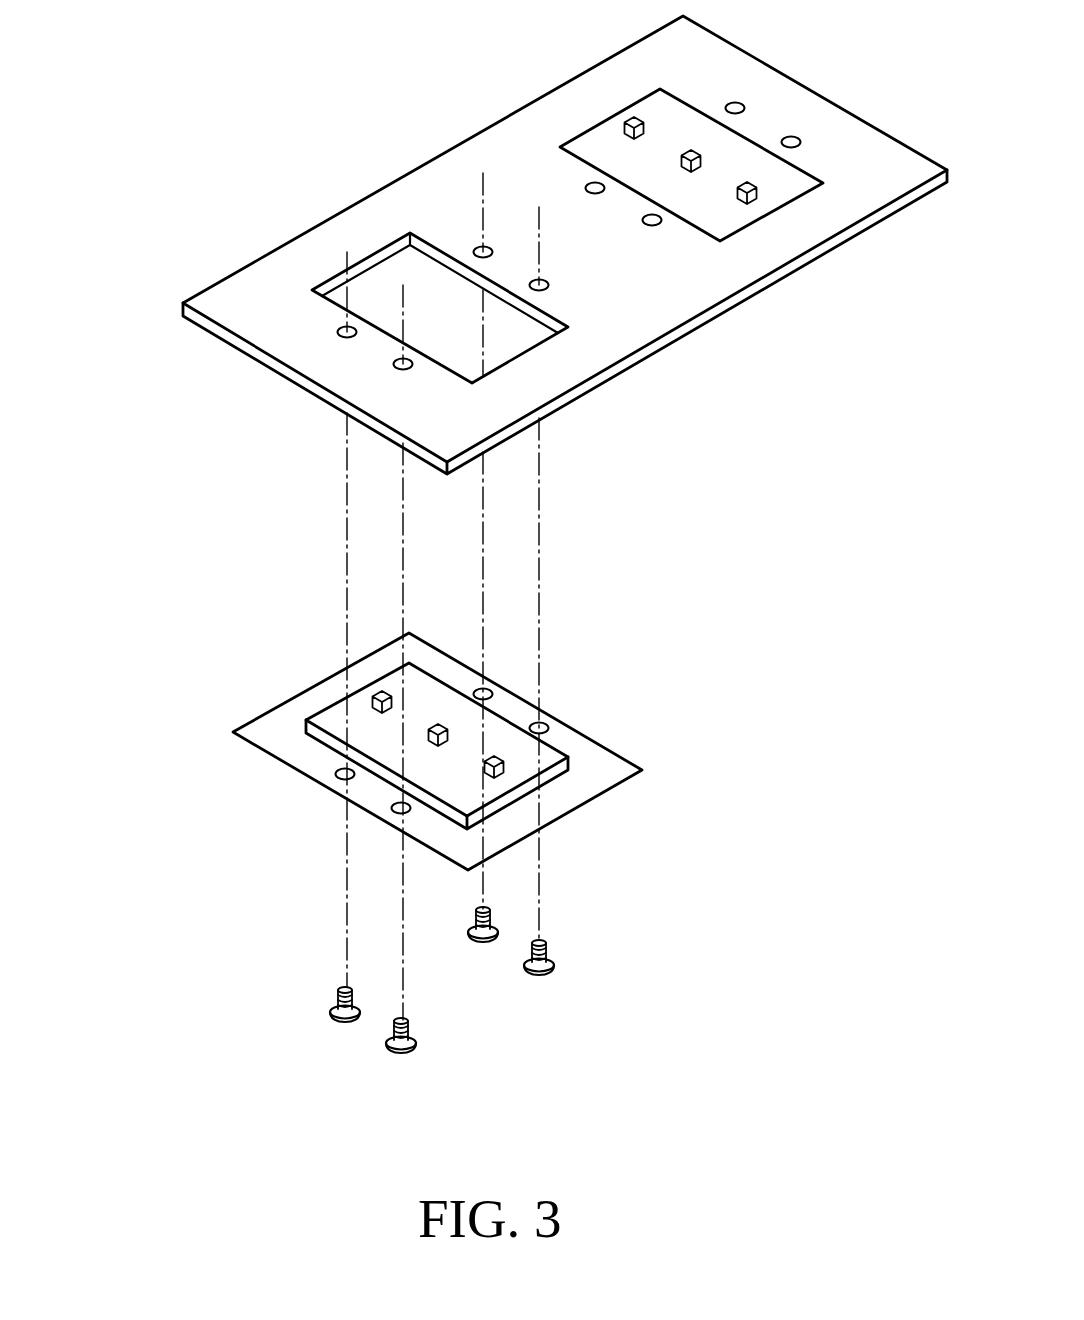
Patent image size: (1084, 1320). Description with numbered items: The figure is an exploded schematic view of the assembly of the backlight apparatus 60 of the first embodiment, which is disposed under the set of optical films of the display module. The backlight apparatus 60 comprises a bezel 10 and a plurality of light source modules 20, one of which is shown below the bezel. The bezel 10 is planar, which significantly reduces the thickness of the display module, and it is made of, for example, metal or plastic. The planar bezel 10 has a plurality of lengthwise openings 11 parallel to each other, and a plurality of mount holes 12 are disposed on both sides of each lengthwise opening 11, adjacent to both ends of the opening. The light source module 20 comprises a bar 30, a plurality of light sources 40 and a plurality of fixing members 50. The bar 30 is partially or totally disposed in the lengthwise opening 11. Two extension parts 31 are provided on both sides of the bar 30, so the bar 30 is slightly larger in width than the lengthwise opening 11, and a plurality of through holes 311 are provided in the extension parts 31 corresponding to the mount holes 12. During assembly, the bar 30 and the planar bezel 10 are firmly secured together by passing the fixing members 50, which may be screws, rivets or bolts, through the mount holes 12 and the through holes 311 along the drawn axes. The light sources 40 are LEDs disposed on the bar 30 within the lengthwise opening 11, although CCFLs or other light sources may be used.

The bezel 10 is at (167, 473).
The lengthwise opening 11 is at (430, 287).
The mount hole 12 is at (483, 250).
The light source module 20 is at (167, 608).
The bar 30 is at (333, 717).
The extension part 31 is at (605, 763).
The through hole 311 is at (541, 727).
The light source 40 is at (438, 724).
The fixing member 50 is at (333, 1007).
The backlight apparatus 60 is at (100, 9).